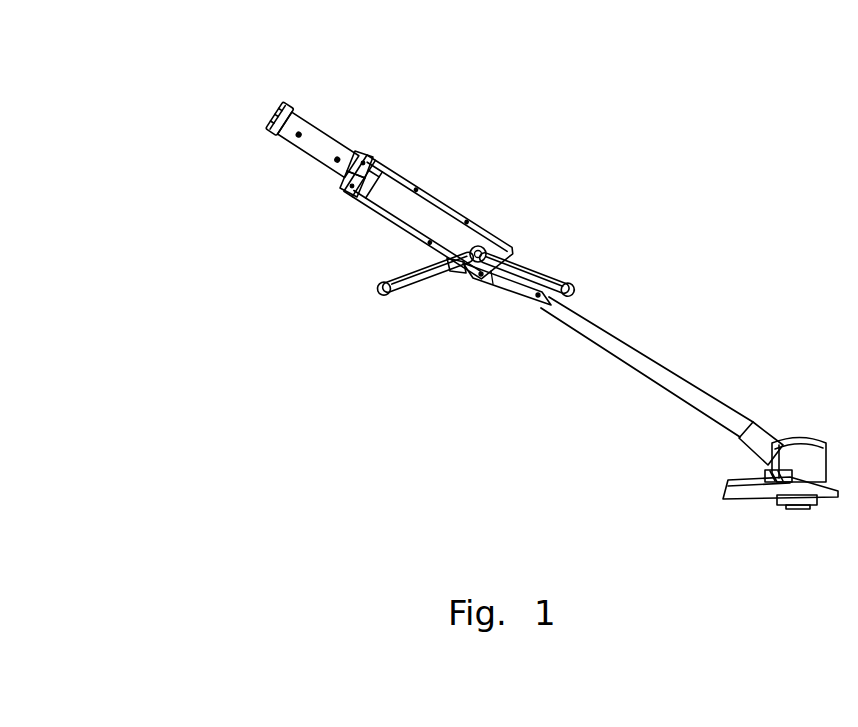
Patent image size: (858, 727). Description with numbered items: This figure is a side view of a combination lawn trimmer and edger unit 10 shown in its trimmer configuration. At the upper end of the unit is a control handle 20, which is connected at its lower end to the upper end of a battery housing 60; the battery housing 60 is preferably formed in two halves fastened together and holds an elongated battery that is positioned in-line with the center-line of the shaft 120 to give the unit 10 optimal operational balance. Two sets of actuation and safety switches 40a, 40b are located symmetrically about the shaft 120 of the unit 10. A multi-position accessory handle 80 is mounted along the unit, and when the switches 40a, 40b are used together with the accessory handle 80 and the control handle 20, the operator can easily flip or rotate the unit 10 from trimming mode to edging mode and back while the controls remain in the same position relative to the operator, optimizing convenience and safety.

The combination lawn trimmer and edger unit 10 is at (460, 270).
The control handle 20 is at (369, 105).
The actuation and safety switch 40a is at (457, 128).
The actuation and safety switch 40b is at (224, 174).
The battery housing 60 is at (393, 220).
The multi-position accessory handle 80 is at (547, 254).
The shaft 120 is at (685, 373).